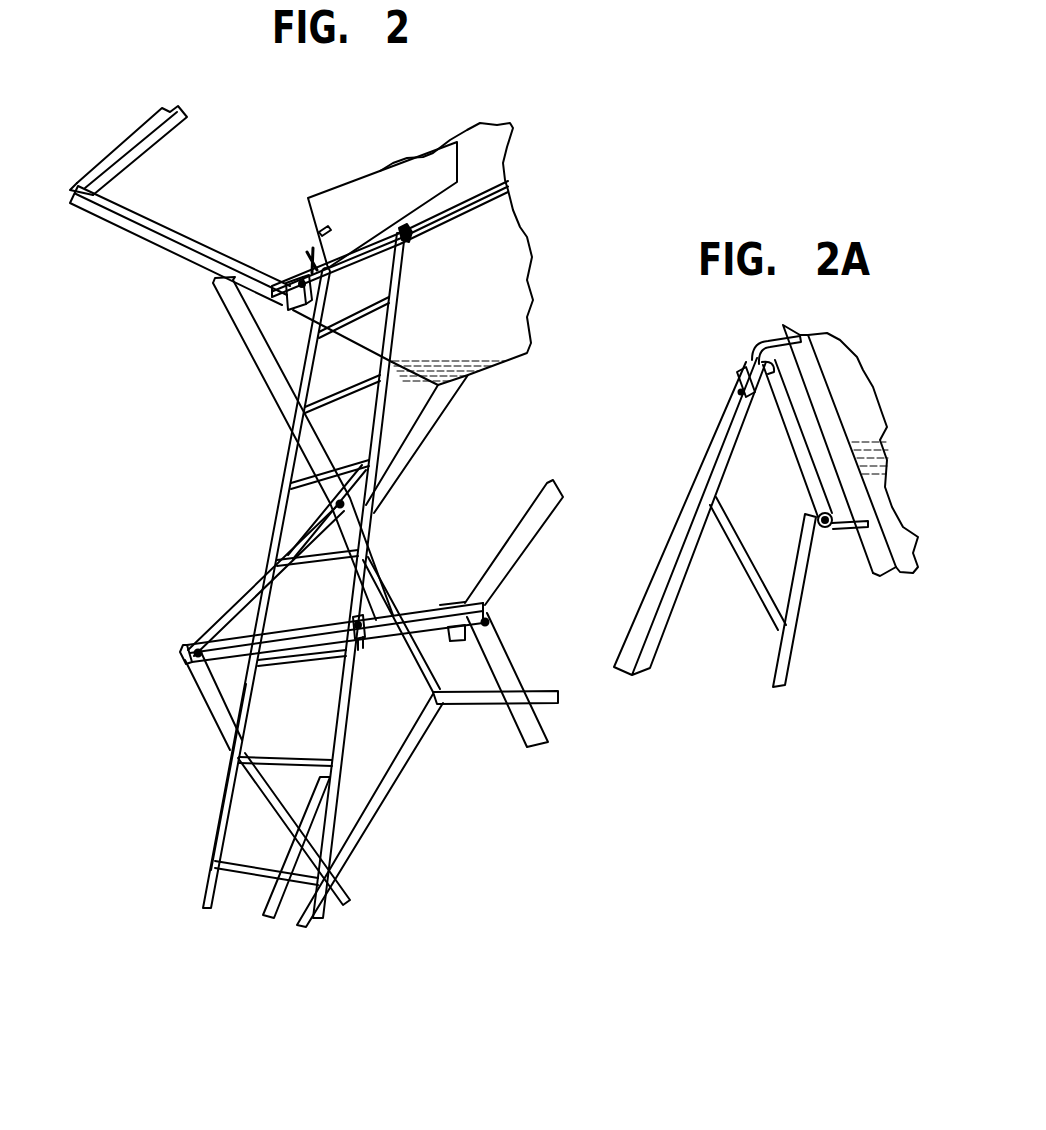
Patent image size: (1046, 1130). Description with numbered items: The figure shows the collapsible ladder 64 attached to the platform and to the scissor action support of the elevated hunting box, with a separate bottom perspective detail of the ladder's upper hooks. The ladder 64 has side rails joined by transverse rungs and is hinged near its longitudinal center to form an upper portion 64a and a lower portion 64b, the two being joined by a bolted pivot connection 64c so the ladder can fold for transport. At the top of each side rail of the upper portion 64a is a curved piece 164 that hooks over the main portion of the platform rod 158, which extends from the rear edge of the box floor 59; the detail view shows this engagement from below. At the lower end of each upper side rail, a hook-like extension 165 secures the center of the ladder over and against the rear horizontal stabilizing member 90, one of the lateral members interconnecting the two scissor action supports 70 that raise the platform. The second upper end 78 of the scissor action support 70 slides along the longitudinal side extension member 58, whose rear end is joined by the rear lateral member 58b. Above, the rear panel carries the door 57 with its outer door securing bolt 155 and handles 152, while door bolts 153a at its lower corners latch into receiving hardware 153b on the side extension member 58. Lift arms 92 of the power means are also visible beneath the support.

In FIG. 2, the door 57 is at (401, 182).
In FIG. 2, the box floor 59 is at (512, 245).
In FIG. 2A, the box floor 59 is at (830, 420).
In FIG. 2, the longitudinal side extension member 58 is at (146, 222).
In FIG. 2, the rear lateral member 58b is at (136, 146).
In FIG. 2, the collapsible ladder 64 is at (297, 470).
In FIG. 2, the upper portion 64a is at (375, 505).
In FIG. 2A, the upper portion 64a is at (707, 468).
In FIG. 2, the lower portion 64b is at (222, 815).
In FIG. 2, the pivot connection 64c is at (363, 627).
In FIG. 2, the scissor action support 70 is at (404, 438).
In FIG. 2, the second upper end 78 is at (214, 283).
In FIG. 2, the horizontal stabilizing member 90 is at (427, 620).
In FIG. 2, the lift arm 92 is at (277, 893).
In FIG. 2, the handle 152 is at (305, 252).
In FIG. 2, the door bolt 153a is at (295, 312).
In FIG. 2, the receiving hardware 153b is at (293, 285).
In FIG. 2, the outer door securing bolt 155 is at (323, 227).
In FIG. 2A, the platform rod 158 is at (845, 533).
In FIG. 2A, the curved piece 164 is at (750, 360).
In FIG. 2, the hook-like extension 165 is at (287, 608).